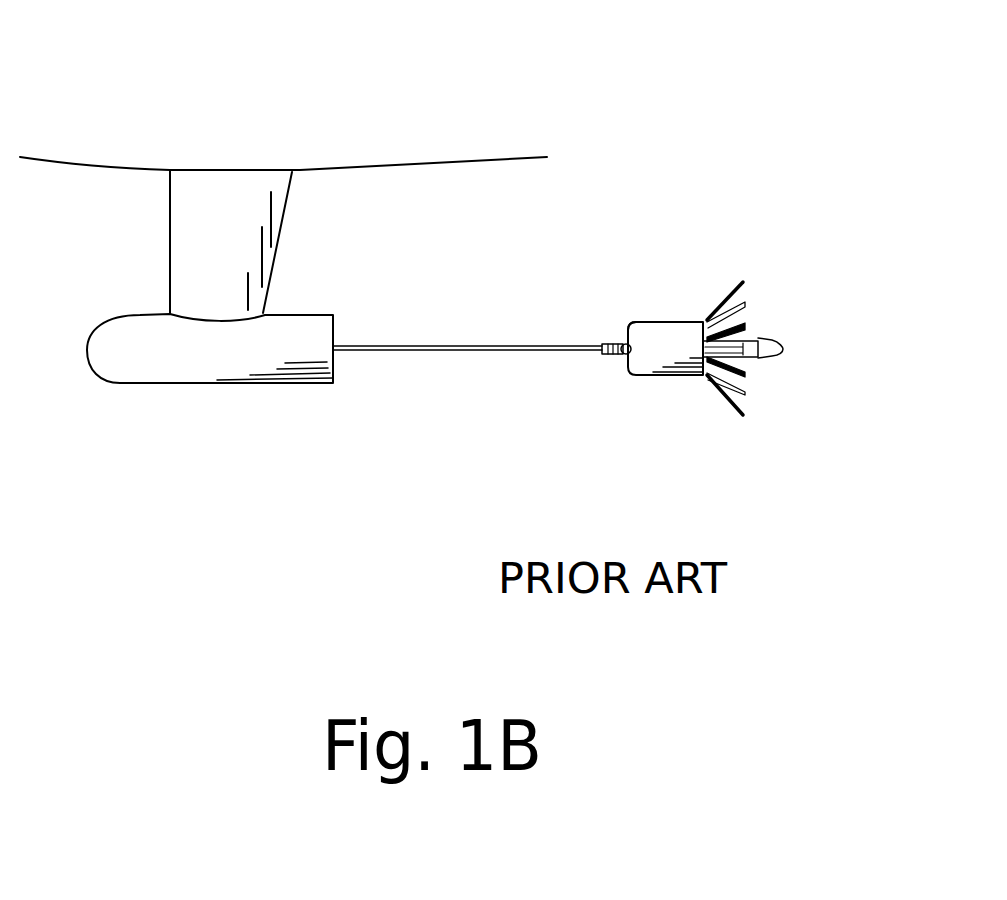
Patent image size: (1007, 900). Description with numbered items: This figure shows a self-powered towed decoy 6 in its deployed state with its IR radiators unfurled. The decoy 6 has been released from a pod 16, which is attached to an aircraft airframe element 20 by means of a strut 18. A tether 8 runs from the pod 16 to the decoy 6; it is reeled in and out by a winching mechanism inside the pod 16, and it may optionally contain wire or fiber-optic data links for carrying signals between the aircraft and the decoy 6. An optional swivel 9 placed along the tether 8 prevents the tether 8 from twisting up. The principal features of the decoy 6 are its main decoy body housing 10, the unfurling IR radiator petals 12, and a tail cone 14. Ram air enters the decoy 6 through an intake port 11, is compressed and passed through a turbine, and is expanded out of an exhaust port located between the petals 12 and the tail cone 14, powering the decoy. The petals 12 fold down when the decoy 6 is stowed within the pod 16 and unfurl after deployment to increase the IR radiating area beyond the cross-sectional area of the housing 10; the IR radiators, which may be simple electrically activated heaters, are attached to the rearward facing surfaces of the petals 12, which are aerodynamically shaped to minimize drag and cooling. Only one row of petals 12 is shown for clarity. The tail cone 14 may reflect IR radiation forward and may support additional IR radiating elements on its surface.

The decoy 6 is at (679, 296).
The tether 8 is at (390, 352).
The swivel 9 is at (610, 357).
The main decoy body housing 10 is at (663, 355).
The intake port 11 is at (623, 332).
The unfurling IR radiator petals 12 is at (745, 290).
The tail cone 14 is at (772, 355).
The pod 16 is at (143, 381).
The strut 18 is at (238, 228).
The aircraft airframe element 20 is at (142, 167).